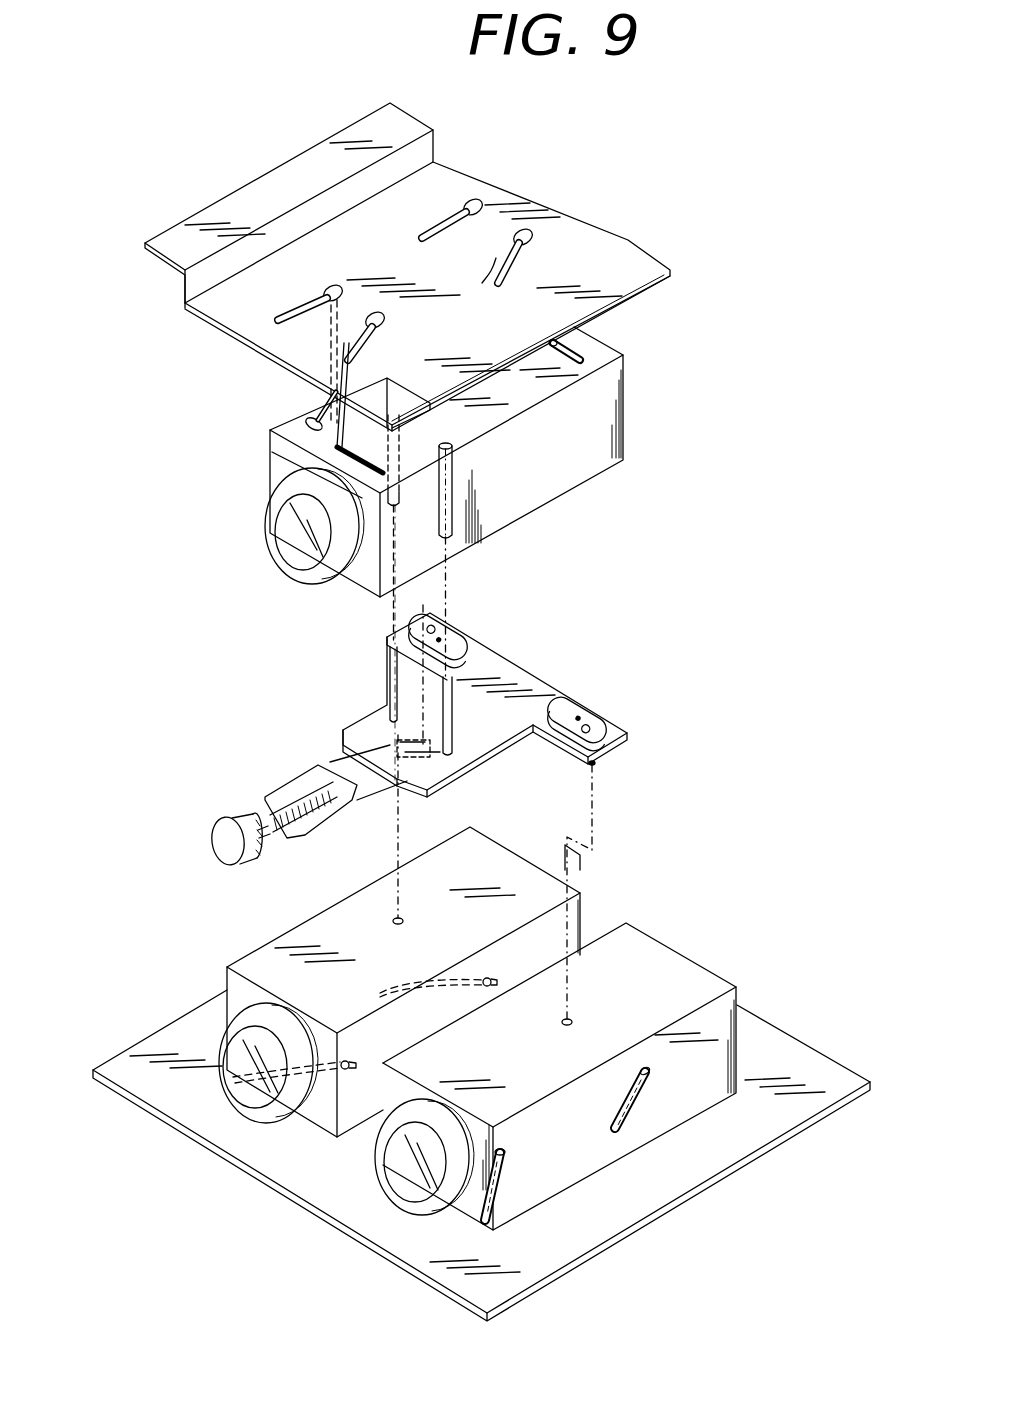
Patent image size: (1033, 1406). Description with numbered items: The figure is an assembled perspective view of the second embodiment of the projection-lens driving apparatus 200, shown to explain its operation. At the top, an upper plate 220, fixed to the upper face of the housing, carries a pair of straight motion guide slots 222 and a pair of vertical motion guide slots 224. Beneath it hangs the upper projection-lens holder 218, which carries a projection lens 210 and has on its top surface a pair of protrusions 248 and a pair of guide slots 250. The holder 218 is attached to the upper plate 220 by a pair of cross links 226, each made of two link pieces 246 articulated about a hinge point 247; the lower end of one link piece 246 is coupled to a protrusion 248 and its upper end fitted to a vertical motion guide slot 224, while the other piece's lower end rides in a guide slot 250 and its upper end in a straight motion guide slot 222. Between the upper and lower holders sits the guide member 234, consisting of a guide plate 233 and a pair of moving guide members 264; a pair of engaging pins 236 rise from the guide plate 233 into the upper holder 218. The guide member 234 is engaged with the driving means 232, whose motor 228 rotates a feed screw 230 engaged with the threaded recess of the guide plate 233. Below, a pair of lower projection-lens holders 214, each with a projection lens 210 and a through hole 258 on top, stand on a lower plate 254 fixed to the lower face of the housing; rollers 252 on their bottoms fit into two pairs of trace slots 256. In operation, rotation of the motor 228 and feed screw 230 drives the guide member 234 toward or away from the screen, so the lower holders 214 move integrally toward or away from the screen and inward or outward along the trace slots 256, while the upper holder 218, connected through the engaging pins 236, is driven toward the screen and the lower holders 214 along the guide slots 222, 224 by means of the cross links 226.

The projection-lens driving apparatus 200 is at (193, 131).
The projection lens 210 is at (300, 525).
The lower projection-lens holder 214 is at (740, 1063).
The upper projection-lens holder 218 is at (612, 418).
The upper plate 220 is at (499, 238).
The straight motion guide slot 222 is at (468, 207).
The vertical motion guide slot 224 is at (370, 348).
The cross link 226 is at (313, 357).
The motor 228 is at (230, 820).
The feed screw 230 is at (285, 796).
The driving means 232 is at (260, 692).
The guide plate 233 is at (517, 673).
The guide member 234 is at (612, 582).
The engaging pin 236 is at (388, 663).
The link piece 246 is at (330, 335).
The hinge point 247 is at (346, 342).
The protrusion 248 is at (306, 419).
The guide slot 250 is at (593, 335).
The roller 252 is at (345, 1130).
The lower plate 254 is at (152, 1075).
The trace slot 256 is at (345, 1062).
The through hole 258 is at (404, 921).
The moving guide member 264 is at (517, 612).